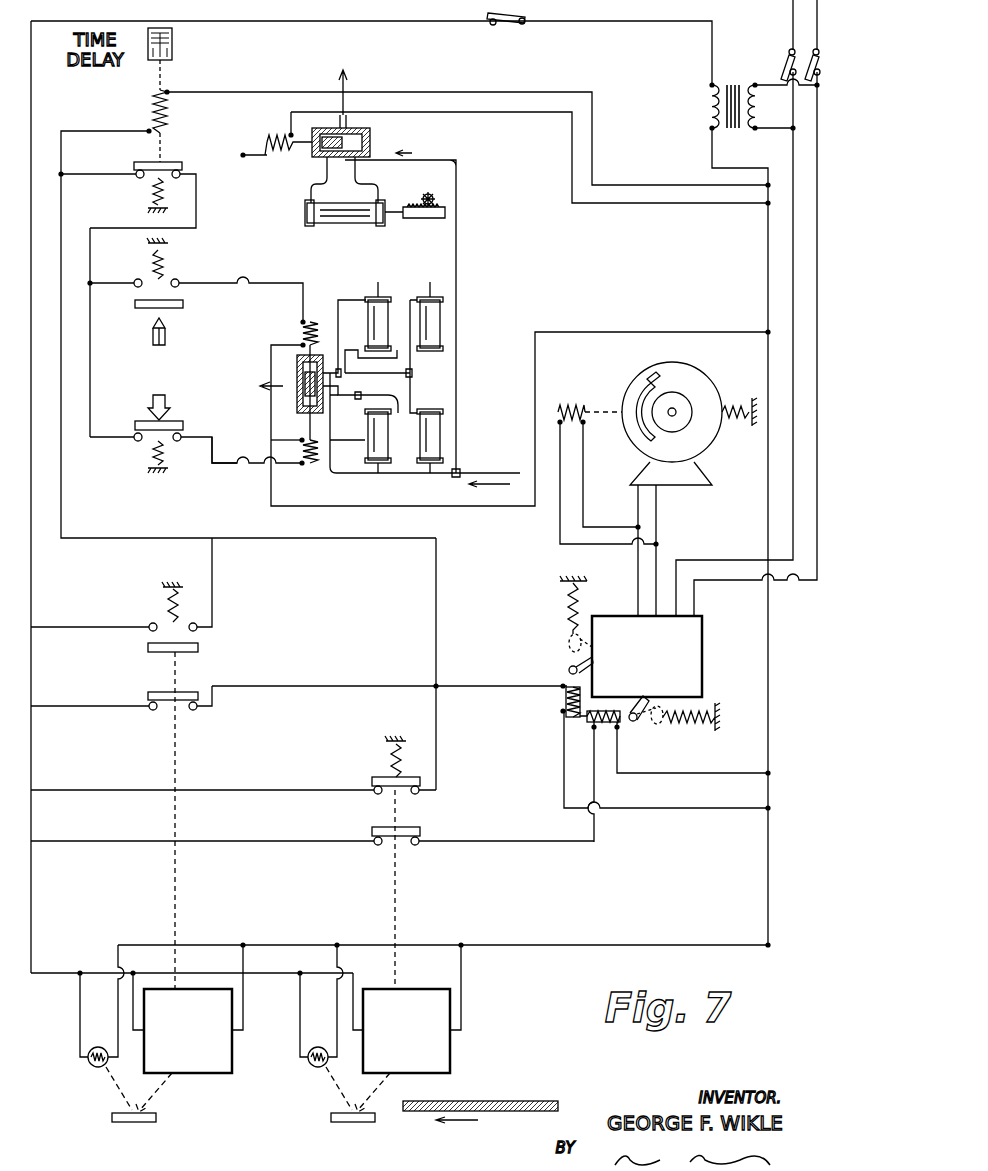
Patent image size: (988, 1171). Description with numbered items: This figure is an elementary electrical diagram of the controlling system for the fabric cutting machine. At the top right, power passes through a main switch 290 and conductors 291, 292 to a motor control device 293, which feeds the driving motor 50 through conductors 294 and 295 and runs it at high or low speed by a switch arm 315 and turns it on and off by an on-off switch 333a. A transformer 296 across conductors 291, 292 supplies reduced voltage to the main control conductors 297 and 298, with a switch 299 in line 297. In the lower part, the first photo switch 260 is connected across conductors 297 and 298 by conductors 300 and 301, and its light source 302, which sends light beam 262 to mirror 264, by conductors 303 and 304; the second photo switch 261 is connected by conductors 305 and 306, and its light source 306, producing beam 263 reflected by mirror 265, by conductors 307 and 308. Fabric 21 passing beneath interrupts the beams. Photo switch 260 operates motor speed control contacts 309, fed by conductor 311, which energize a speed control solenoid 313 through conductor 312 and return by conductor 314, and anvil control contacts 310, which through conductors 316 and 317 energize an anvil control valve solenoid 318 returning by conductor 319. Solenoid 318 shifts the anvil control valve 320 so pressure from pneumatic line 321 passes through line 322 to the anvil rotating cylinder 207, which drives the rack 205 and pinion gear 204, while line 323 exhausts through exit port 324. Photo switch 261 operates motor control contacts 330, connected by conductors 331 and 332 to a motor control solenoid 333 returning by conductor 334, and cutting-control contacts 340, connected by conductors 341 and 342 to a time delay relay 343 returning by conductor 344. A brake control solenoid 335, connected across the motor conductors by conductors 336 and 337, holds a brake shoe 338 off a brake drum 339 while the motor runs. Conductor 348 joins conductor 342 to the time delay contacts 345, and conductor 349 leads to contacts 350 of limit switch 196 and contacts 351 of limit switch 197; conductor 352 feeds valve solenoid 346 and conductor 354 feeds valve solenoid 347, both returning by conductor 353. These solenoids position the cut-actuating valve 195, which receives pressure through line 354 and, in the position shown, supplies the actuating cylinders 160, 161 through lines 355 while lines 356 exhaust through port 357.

The fabric 21 is at (510, 1100).
The driving motor 50 is at (689, 423).
The pneumatic double-acting actuating cylinder 160 is at (390, 305).
The pneumatic double-acting actuating cylinder 161 is at (428, 462).
The solenoid-operated control valve 195 is at (287, 430).
The limit switch 196 is at (170, 342).
The limit switch 197 is at (172, 390).
The pinion gear 204 is at (436, 195).
The toothed rack 205 is at (440, 220).
The double-acting pneumatic cylinder 207 is at (337, 224).
The photoelectric switch assembly 260 is at (464, 1066).
The photoelectric switch assembly 261 is at (244, 1066).
The light beam 262 is at (338, 1090).
The light beam 263 is at (118, 1095).
The horizontal mirror 264 is at (338, 1125).
The horizontal mirror 265 is at (120, 1125).
The main switch 290 is at (787, 62).
The power conductor 291 is at (791, 231).
The power conductor 292 is at (815, 285).
The motor control device 293 is at (702, 632).
The motor conductor 294 is at (636, 558).
The motor conductor 295 is at (658, 552).
The transformer 296 is at (733, 130).
The main conductor 297 is at (35, 563).
The main conductor 298 is at (770, 694).
The switch 299 is at (508, 24).
The conductor 300 is at (354, 984).
The conductor 301 is at (463, 968).
The light source 302 is at (318, 1046).
The conductor 303 is at (298, 1030).
The conductor 304 is at (334, 952).
The conductor 305 is at (135, 985).
The conductor and light source 306 is at (86, 1062).
The conductor 307 is at (78, 1005).
The conductor 308 is at (116, 950).
The motor speed control contacts 309 is at (372, 832).
The anvil control contacts 310 is at (372, 781).
The conductor 311 is at (270, 841).
The conductor 312 is at (592, 778).
The speed control solenoid 313 is at (592, 730).
The conductor 314 is at (686, 772).
The switch arm 315 is at (645, 698).
The conductor 316 is at (276, 789).
The conductor 317 is at (434, 604).
The anvil control valve solenoid 318 is at (272, 136).
The conductor 319 is at (480, 113).
The anvil control valve 320 is at (370, 132).
The pneumatic line 321 is at (458, 203).
The line 322 is at (320, 180).
The line 323 is at (376, 186).
The exit port 324 is at (350, 110).
The motor control contacts 330 is at (200, 690).
The conductor 331 is at (105, 706).
The conductor 332 is at (345, 690).
The motor control solenoid 333 is at (565, 700).
The on-off switch 333a is at (569, 668).
The conductor 334 is at (668, 810).
The brake control solenoid 335 is at (582, 406).
The conductor 336 is at (562, 522).
The conductor 337 is at (584, 514).
The brake shoe 338 is at (648, 380).
The brake drum 339 is at (686, 398).
The cutting-control contacts 340 is at (200, 648).
The conductor 341 is at (118, 627).
The conductor 342 is at (158, 530).
The time delay relay 343 is at (150, 103).
The conductor 344 is at (530, 92).
The time delay contacts 345 is at (180, 162).
The valve solenoid 346 is at (303, 327).
The valve solenoid 347 is at (310, 466).
The conductor 348 is at (104, 180).
The conductor 349 is at (91, 366).
The limit switch contacts 350 is at (184, 304).
The limit switch contacts 351 is at (183, 424).
The conductor 352 is at (277, 282).
The conductor 353 is at (585, 331).
The conductor and pneumatic line 354 is at (215, 470).
The lines 355 is at (398, 410).
The lines 356 is at (330, 330).
The exhaust port 357 is at (297, 372).